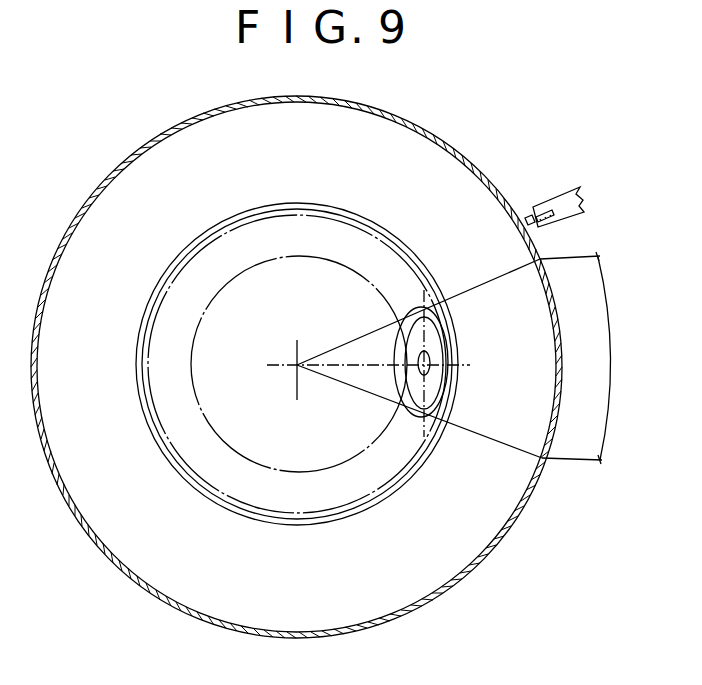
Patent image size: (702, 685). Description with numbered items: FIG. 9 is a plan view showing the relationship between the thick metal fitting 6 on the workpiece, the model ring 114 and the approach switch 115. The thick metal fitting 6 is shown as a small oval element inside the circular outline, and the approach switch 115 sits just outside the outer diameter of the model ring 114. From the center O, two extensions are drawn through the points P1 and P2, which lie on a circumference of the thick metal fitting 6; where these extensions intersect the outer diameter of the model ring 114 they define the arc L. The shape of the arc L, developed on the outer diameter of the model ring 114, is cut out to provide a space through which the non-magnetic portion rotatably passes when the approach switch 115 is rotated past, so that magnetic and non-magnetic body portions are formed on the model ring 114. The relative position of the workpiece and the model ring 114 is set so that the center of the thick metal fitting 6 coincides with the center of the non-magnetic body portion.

The model ring 114 is at (473, 163).
The approach switch 115 is at (525, 218).
The thick metal fitting 6 is at (432, 384).
The center O is at (297, 365).
The point P1 is at (422, 418).
The point P2 is at (426, 311).
The arc L is at (583, 358).